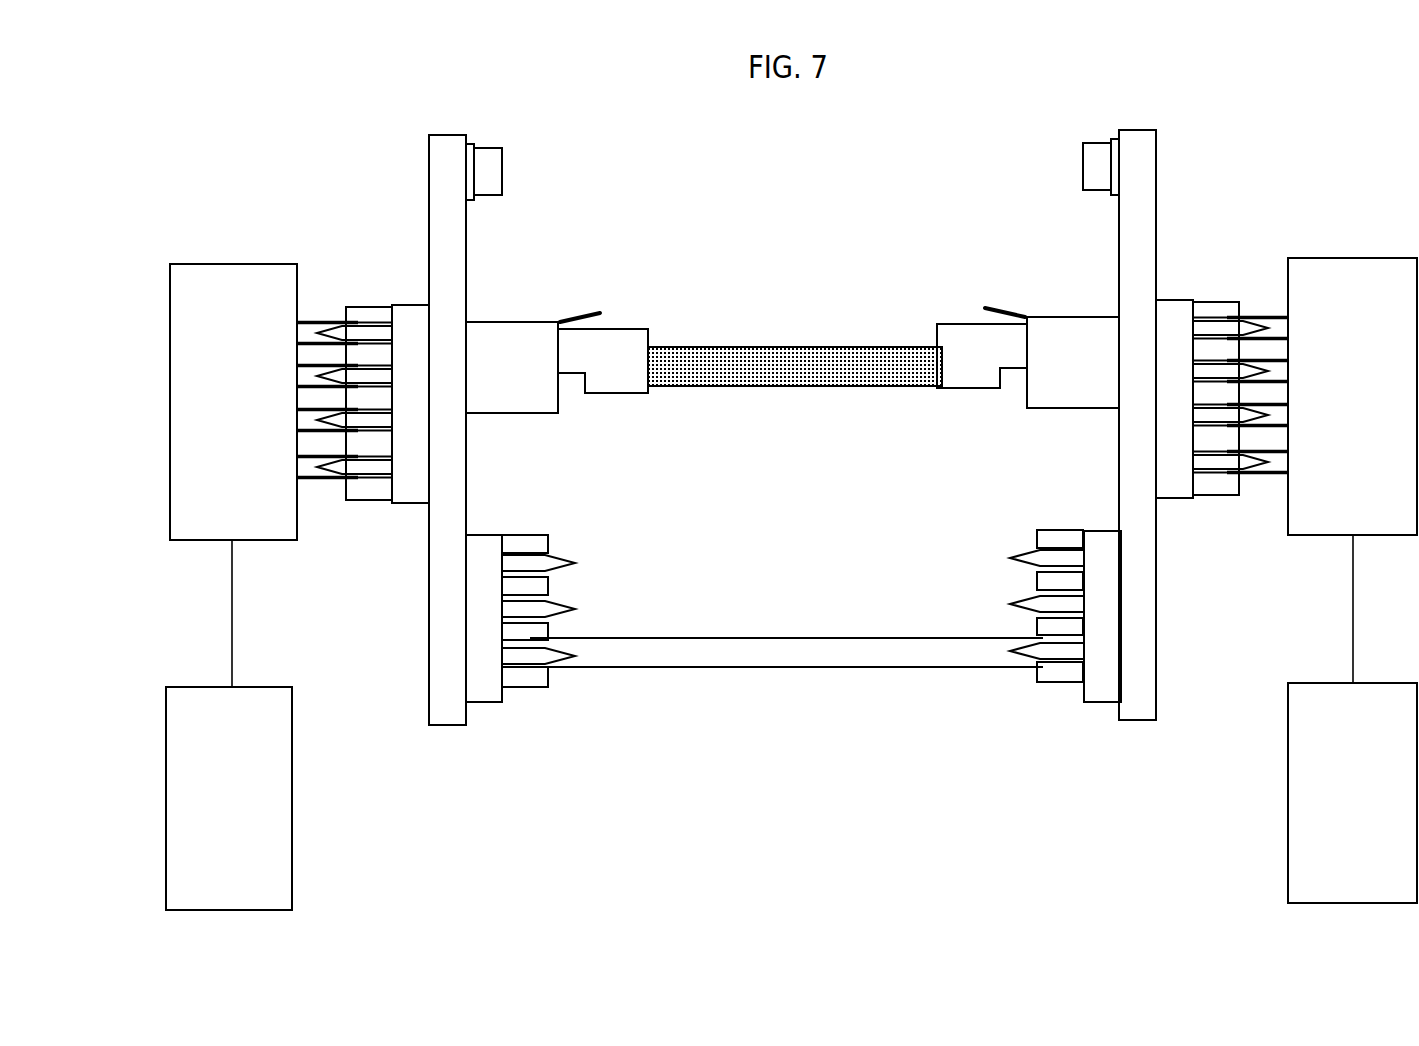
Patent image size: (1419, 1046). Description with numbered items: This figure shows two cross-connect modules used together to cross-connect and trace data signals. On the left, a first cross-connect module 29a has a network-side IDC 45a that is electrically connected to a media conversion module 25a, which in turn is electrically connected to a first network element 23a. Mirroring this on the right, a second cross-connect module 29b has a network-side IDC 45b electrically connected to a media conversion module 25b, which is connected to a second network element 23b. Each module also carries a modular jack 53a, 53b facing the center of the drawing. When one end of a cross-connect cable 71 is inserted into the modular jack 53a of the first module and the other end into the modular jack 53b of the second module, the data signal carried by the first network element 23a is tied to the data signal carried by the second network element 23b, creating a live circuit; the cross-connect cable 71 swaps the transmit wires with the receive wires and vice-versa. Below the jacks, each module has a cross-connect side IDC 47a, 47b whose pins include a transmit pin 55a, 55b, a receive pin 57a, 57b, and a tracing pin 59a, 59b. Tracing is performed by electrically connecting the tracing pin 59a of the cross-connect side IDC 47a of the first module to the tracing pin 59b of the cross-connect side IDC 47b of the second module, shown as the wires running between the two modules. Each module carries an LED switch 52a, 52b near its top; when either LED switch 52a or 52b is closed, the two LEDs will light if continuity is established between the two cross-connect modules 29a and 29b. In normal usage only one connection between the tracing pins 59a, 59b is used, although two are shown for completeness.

The first network element 23a is at (166, 815).
The second network element 23b is at (1288, 777).
The media conversion module 25a is at (207, 264).
The media conversion module 25b is at (1345, 258).
The first cross-connect module 29a is at (411, 781).
The second cross-connect module 29b is at (1151, 778).
The network-side IDC 45a is at (407, 303).
The network-side IDC 45b is at (1177, 299).
The cross-connect side IDC 47a is at (487, 702).
The cross-connect side IDC 47b is at (1098, 702).
The LED switch 52a is at (502, 172).
The LED switch 52b is at (1084, 167).
The modular jack 53a is at (507, 413).
The modular jack 53b is at (985, 390).
The transmit pin 55a is at (510, 563).
The transmit pin 55b is at (1077, 558).
The receive pin 57a is at (510, 609).
The receive pin 57b is at (1077, 603).
The tracing pin 59a is at (510, 657).
The tracing pin 59b is at (1077, 652).
The cross-connect cable 71 is at (838, 347).